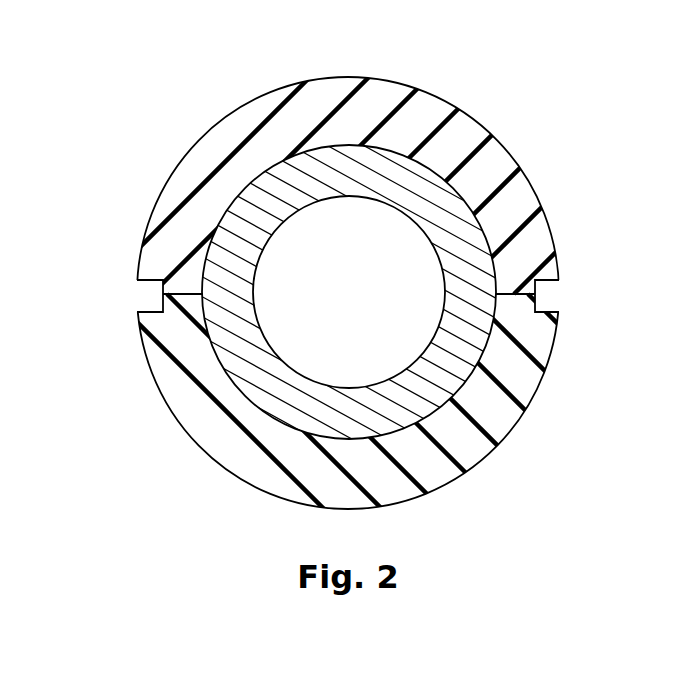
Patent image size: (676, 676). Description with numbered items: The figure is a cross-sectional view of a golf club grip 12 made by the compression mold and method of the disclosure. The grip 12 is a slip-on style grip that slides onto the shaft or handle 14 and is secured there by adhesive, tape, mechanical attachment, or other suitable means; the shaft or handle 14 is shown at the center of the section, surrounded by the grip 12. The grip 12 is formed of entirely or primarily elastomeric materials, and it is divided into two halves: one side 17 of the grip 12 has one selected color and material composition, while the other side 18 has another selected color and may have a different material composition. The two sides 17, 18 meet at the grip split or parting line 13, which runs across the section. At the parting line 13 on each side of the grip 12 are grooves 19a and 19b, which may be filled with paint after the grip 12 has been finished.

The golf club grip 12 is at (537, 184).
The grip split or parting line 13 is at (197, 292).
The shaft or handle 14 is at (427, 232).
The one side of grip 17 is at (465, 133).
The other side of grip 18 is at (432, 469).
The groove 19a is at (558, 312).
The groove 19b is at (143, 312).